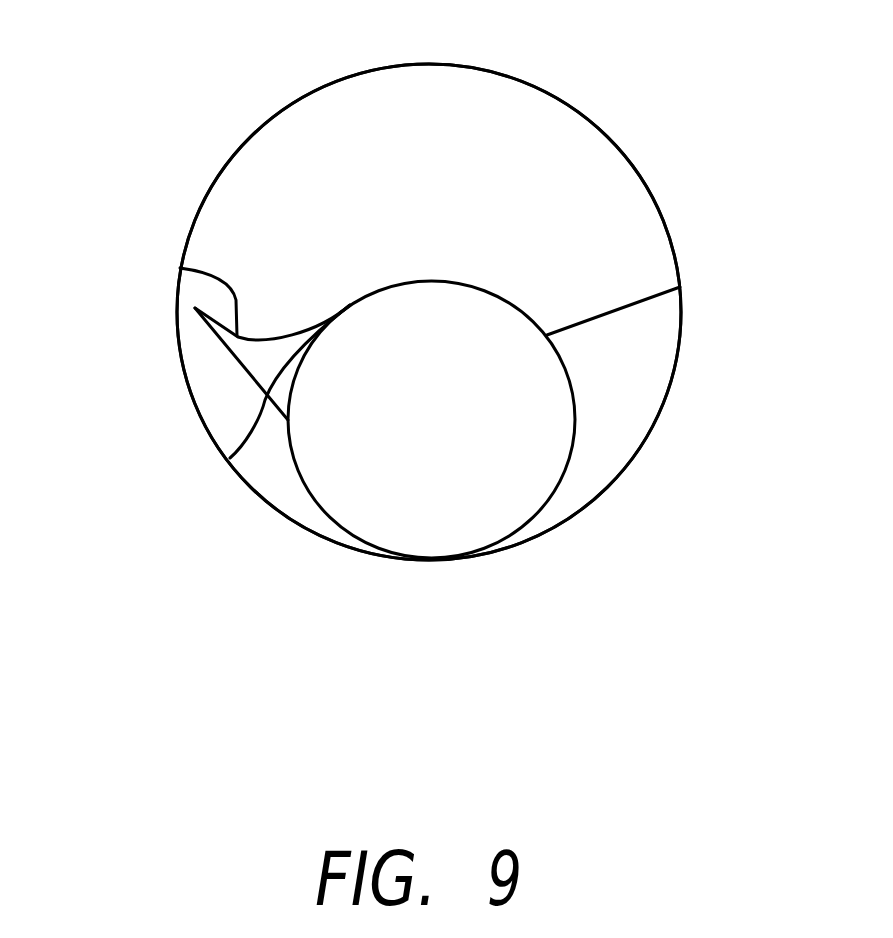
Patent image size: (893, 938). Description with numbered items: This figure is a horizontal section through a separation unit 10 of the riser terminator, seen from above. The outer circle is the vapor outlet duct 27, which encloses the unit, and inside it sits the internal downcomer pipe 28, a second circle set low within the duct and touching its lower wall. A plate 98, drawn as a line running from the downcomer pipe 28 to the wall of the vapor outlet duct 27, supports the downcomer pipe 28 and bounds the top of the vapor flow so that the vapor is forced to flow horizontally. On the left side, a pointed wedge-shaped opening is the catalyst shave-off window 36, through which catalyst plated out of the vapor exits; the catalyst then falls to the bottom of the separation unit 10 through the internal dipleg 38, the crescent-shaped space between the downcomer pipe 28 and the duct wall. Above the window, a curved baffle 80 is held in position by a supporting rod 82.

The separation unit 10 is at (210, 197).
The vapor outlet duct 27 is at (443, 102).
The internal downcomer pipe 28 is at (443, 525).
The catalyst shave-off window 36 is at (185, 310).
The internal dipleg 38 is at (273, 480).
The baffle 80 is at (180, 267).
The supporting rod 82 is at (230, 458).
The plate 98 is at (615, 373).